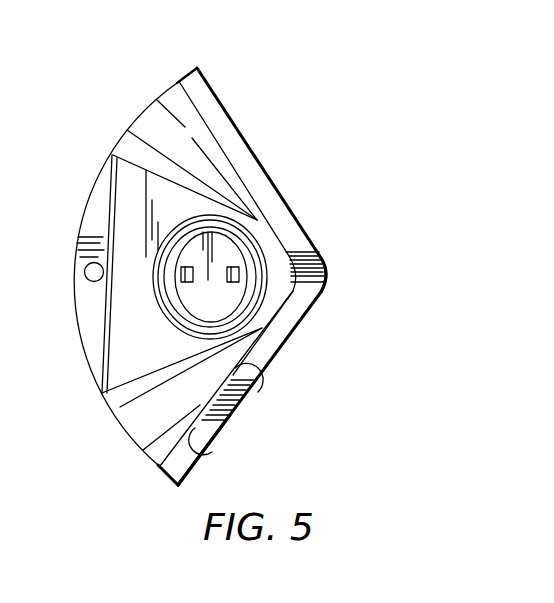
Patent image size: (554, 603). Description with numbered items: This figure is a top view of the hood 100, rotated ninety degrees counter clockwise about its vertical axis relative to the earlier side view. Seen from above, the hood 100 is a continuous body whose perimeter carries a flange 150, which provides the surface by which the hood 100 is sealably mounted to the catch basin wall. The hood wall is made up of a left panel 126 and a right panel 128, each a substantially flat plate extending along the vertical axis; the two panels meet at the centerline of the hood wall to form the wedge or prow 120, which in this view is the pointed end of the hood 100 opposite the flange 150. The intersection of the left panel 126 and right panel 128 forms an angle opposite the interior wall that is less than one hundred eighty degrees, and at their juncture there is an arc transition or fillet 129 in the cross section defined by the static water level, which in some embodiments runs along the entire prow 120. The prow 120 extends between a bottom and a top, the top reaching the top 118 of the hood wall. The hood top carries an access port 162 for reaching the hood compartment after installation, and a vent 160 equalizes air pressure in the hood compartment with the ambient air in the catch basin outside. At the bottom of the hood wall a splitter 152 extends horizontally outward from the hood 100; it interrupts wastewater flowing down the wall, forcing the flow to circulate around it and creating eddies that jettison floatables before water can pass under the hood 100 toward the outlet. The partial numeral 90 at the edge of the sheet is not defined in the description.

The hood 100 is at (284, 139).
The flange 150 is at (185, 73).
The right panel 128 is at (222, 143).
The access port 162 is at (223, 262).
The fillet 129 is at (283, 266).
The prow 120 is at (324, 286).
The splitter 152 is at (287, 342).
The left panel 126 is at (250, 378).
The top of the hood wall 118 is at (202, 455).
The vent 160 is at (91, 282).
The tool body 90 is at (19, 127).